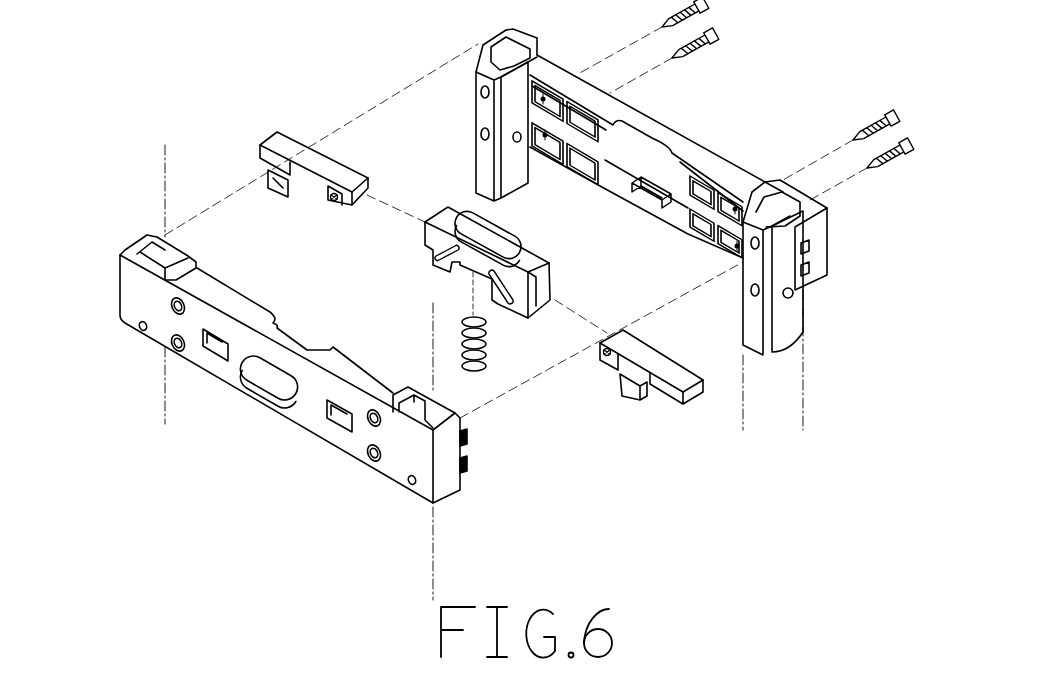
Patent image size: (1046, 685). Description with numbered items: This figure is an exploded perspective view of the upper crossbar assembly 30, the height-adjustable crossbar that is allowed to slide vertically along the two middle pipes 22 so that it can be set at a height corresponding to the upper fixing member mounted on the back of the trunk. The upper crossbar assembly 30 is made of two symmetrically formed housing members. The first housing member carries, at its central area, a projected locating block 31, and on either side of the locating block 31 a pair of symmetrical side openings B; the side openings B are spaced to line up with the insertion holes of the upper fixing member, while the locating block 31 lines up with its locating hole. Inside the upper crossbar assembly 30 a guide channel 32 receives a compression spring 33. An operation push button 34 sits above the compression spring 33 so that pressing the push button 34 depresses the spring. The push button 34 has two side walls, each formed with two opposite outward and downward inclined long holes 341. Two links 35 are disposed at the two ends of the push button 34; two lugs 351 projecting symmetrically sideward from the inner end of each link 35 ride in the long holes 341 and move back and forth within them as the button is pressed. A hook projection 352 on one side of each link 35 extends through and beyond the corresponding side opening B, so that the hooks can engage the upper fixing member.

The middle pipe 22 is at (793, 331).
The upper crossbar assembly 30 is at (418, 284).
The projected locating block 31 is at (258, 392).
The guide channel 32 is at (653, 190).
The compression spring 33 is at (487, 373).
The operation push button 34 is at (477, 277).
The inclined long hole 341 is at (432, 256).
The link 35 is at (464, 303).
The lug 351 is at (331, 201).
The hook projection 352 is at (268, 183).
The side opening B is at (207, 345).